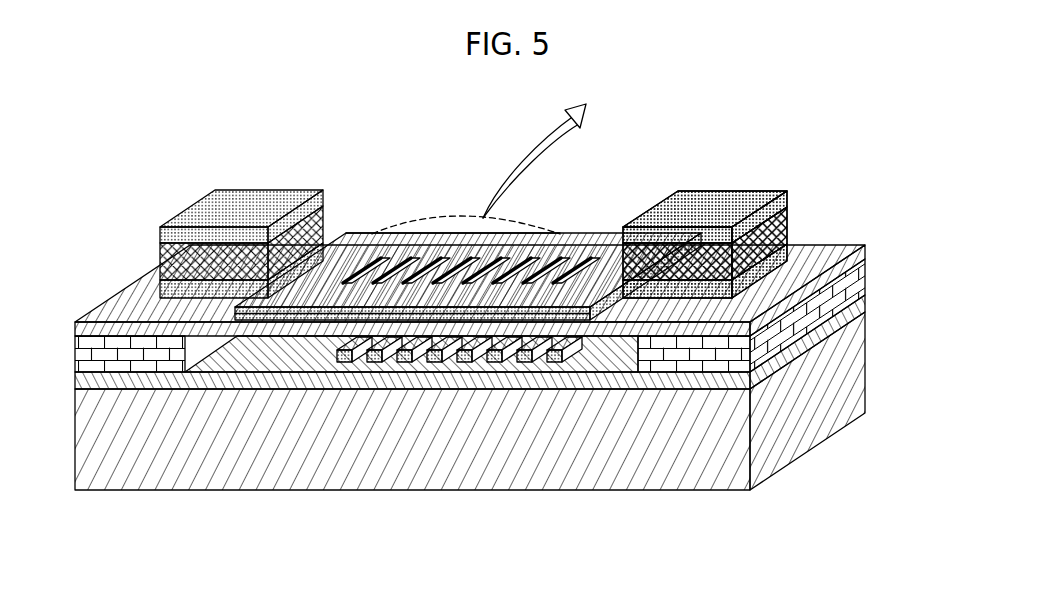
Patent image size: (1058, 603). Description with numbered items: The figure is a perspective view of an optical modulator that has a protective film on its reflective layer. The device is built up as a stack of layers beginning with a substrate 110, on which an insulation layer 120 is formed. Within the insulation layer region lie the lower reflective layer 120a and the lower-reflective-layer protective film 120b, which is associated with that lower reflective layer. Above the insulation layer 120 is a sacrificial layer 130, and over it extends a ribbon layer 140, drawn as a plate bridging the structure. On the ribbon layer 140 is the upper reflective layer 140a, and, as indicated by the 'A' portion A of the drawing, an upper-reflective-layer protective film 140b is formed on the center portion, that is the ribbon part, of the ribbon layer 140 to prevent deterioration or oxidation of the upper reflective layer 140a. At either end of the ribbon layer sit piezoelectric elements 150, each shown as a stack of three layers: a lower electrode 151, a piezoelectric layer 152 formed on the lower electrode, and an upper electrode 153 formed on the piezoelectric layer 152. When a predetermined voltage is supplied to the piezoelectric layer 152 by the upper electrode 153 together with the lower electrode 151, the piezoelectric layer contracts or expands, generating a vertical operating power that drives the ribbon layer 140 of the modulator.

The substrate 110 is at (862, 376).
The insulation layer 120 is at (866, 306).
The lower reflective layer 120a is at (428, 356).
The lower-reflective-layer protective film 120b is at (310, 368).
The sacrificial layer 130 is at (866, 275).
The ribbon layer 140 is at (591, 230).
The upper reflective layer 140a is at (607, 300).
The upper-reflective-layer protective film 140b is at (375, 233).
The piezoelectric elements 150 is at (553, 219).
The lower electrode 151 is at (749, 250).
The piezoelectric layer 152 is at (788, 222).
The upper electrode 153 is at (788, 198).
The 'A' portion A is at (489, 164).